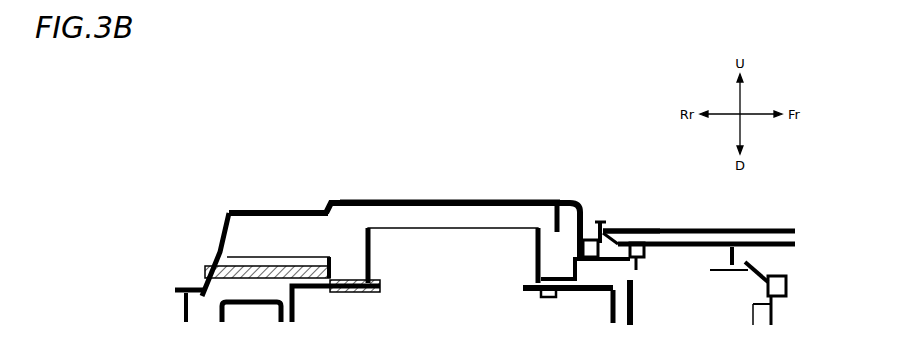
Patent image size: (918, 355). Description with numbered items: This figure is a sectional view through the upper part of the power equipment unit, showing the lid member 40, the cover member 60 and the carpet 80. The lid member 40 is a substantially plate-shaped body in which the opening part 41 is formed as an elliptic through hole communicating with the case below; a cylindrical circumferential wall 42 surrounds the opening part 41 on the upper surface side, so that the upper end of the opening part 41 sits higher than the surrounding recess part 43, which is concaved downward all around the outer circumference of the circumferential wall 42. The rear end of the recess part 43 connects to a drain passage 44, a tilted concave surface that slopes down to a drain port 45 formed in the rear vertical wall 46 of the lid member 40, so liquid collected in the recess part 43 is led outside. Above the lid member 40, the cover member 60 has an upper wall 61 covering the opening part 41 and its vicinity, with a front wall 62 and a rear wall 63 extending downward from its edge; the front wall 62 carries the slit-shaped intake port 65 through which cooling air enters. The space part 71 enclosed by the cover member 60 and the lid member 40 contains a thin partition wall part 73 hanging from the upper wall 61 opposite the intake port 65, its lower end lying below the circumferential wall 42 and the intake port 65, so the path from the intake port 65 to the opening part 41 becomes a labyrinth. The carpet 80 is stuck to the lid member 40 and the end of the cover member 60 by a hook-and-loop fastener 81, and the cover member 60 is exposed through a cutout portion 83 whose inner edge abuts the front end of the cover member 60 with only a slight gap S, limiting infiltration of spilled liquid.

The lid member 40 is at (205, 267).
The opening part 41 is at (395, 246).
The circumferential wall 42 is at (360, 241).
The recess part 43 is at (348, 293).
The drain passage 44 is at (258, 266).
The drain port 45 is at (213, 257).
The rear vertical wall 46 is at (202, 285).
The cover member 60 is at (490, 191).
The upper wall 61 is at (428, 199).
The front wall 62 is at (582, 210).
The rear wall 63 is at (224, 227).
The intake port 65 is at (600, 222).
The space part 71 is at (271, 241).
The partition wall part 73 is at (560, 207).
The carpet 80 is at (760, 230).
The hook-and-loop fastener 81 is at (640, 247).
The cutout portion 83 is at (600, 221).
The gap S is at (607, 207).